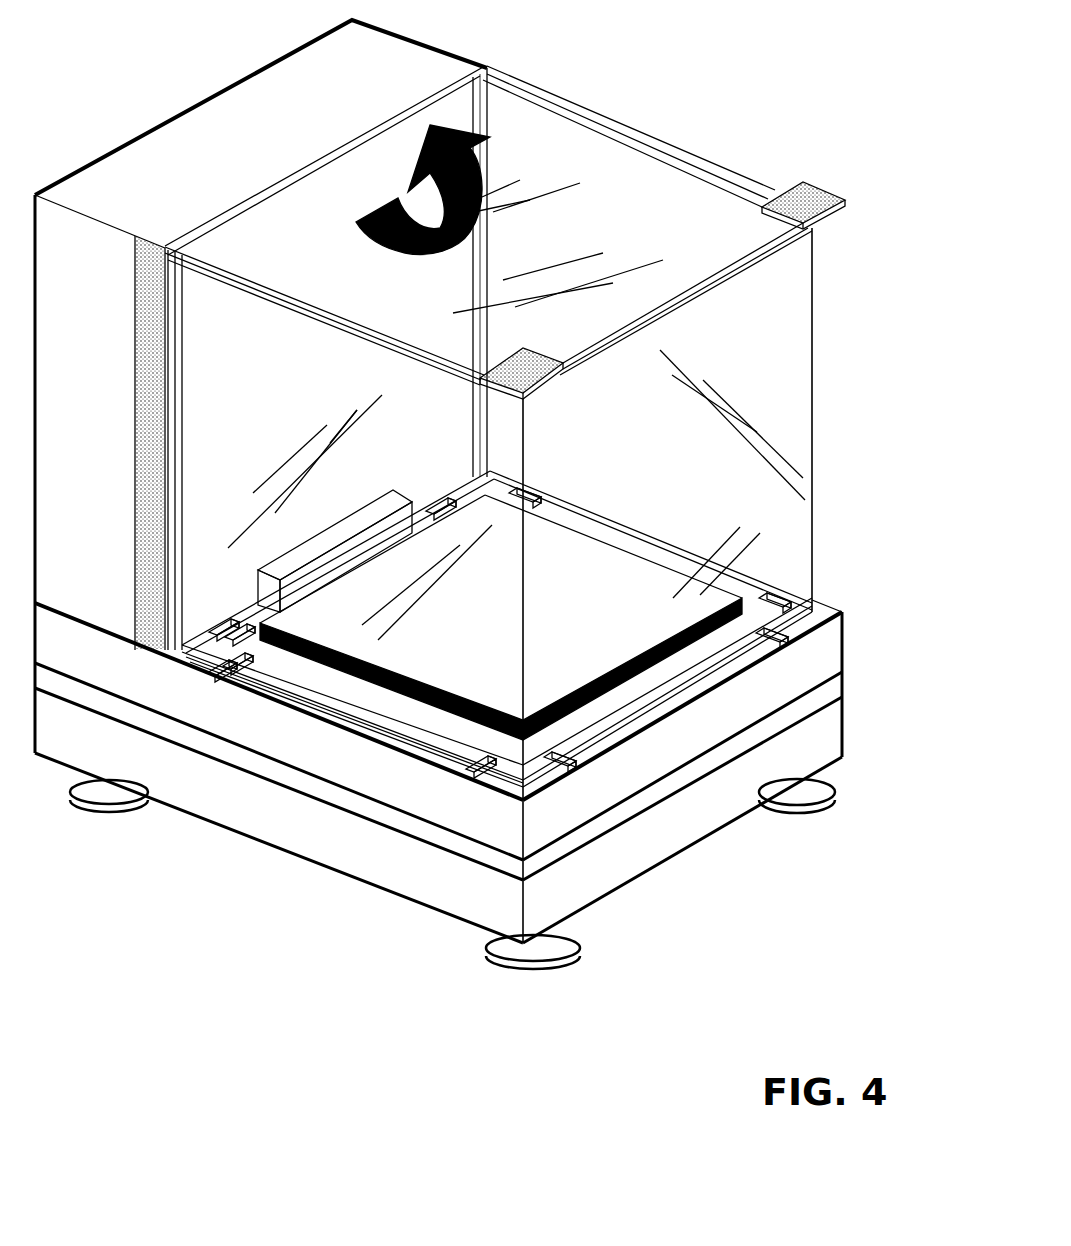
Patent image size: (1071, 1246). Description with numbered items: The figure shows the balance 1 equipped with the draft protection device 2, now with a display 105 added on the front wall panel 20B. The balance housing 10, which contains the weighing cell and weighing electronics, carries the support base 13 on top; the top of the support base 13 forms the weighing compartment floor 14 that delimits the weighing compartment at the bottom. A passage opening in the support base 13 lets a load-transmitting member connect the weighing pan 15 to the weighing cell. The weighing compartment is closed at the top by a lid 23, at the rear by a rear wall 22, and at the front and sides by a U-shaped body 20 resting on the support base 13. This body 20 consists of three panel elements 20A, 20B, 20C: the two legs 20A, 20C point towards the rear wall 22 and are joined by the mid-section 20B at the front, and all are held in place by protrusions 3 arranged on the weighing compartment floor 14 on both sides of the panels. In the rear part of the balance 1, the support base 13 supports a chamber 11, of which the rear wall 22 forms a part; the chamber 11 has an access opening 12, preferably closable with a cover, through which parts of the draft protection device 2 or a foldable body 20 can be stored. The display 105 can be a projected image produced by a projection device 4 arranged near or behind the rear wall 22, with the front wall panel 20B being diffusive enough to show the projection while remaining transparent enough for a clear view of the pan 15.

The balance 1 is at (303, 927).
The draft protection device 2 is at (652, 106).
The protrusions 3 is at (770, 645).
The projection device 4 is at (348, 540).
The balance housing 10 is at (316, 847).
The chamber 11 is at (163, 185).
The access opening 12 is at (148, 425).
The support base 13 is at (263, 725).
The weighing compartment floor 14 is at (355, 730).
The weighing pan 15 is at (353, 792).
The U-shaped body 20 is at (817, 467).
The panel element 20A is at (763, 287).
The front wall panel 20B is at (755, 395).
The panel element 20C is at (360, 378).
The rear wall 22 is at (352, 207).
The lid 23 is at (517, 140).
The display 105 is at (557, 535).